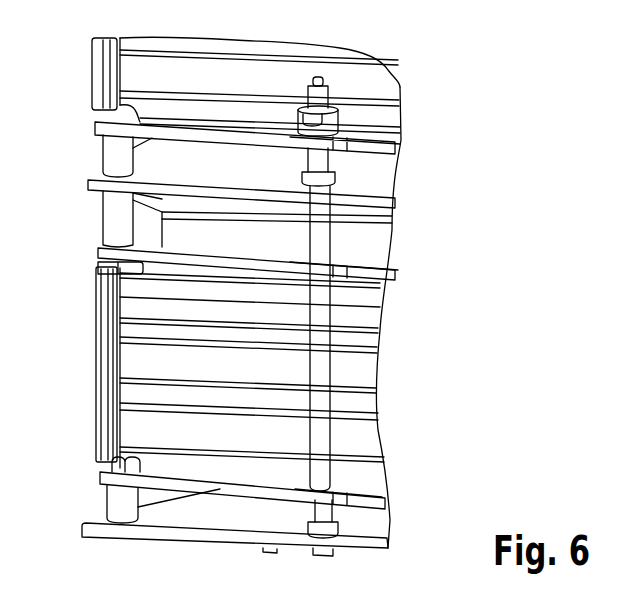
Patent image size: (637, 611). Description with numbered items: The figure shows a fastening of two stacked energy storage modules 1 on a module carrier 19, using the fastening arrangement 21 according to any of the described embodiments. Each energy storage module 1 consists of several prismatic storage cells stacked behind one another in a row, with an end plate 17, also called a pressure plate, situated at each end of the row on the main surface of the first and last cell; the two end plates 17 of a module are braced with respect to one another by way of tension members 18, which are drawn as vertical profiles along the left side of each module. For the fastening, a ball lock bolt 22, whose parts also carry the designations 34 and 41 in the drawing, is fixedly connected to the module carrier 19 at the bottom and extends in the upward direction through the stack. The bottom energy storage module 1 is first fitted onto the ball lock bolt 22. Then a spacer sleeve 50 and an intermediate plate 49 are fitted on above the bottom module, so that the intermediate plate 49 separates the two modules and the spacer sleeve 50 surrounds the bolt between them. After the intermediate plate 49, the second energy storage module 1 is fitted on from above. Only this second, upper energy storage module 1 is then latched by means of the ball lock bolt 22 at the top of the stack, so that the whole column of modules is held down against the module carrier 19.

The energy storage module 1 is at (415, 500).
The end plate 17 is at (133, 76).
The tension member 18 is at (98, 47).
The module carrier 19 is at (360, 523).
The arrangement 21 is at (506, 109).
The ball lock bolt 22 is at (337, 122).
The bolt head 34 is at (318, 106).
The nut 41 is at (318, 106).
The intermediate plate 49 is at (95, 184).
The spacer sleeve 50 is at (322, 240).